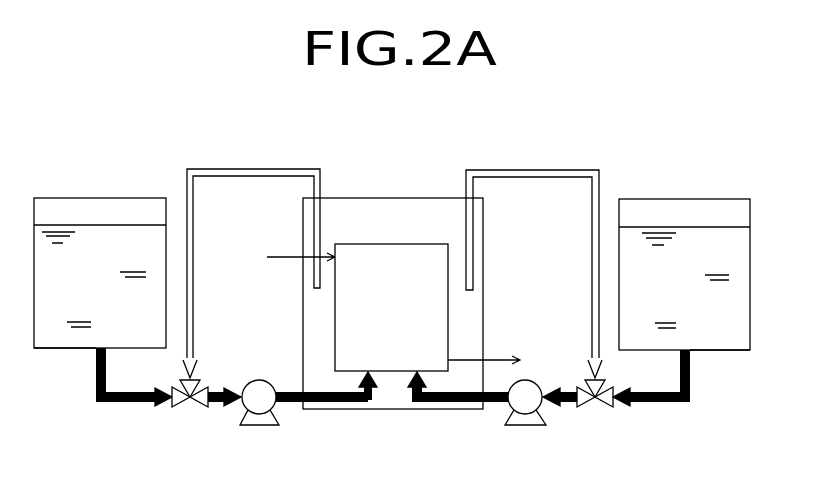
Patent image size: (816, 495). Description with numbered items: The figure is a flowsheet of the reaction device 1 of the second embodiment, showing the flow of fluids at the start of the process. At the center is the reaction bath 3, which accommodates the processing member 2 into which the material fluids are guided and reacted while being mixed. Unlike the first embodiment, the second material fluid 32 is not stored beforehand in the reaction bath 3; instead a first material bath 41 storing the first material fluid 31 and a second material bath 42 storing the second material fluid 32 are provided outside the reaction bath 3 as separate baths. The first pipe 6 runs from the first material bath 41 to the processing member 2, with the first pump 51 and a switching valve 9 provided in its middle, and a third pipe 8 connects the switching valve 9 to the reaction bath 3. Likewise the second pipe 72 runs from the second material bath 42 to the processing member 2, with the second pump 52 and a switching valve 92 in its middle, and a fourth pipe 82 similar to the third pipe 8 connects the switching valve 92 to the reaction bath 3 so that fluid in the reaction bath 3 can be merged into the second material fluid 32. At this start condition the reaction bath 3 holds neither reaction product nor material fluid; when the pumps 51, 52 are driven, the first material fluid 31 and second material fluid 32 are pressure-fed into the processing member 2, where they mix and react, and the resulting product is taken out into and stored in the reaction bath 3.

The reaction device 1 is at (585, 139).
The processing member 2 is at (438, 244).
The reaction bath 3 is at (340, 198).
The first pipe 6 is at (120, 405).
The third pipe 8 is at (229, 169).
The switching valve 9 is at (193, 405).
The first material fluid 31 is at (60, 338).
The second material fluid 32 is at (727, 340).
The first material bath 41 is at (127, 198).
The second material bath 42 is at (710, 199).
The first pump 51 is at (258, 381).
The second pump 52 is at (531, 382).
The second pipe 72 is at (667, 405).
The fourth pipe 82 is at (527, 170).
The switching valve 92 is at (598, 405).